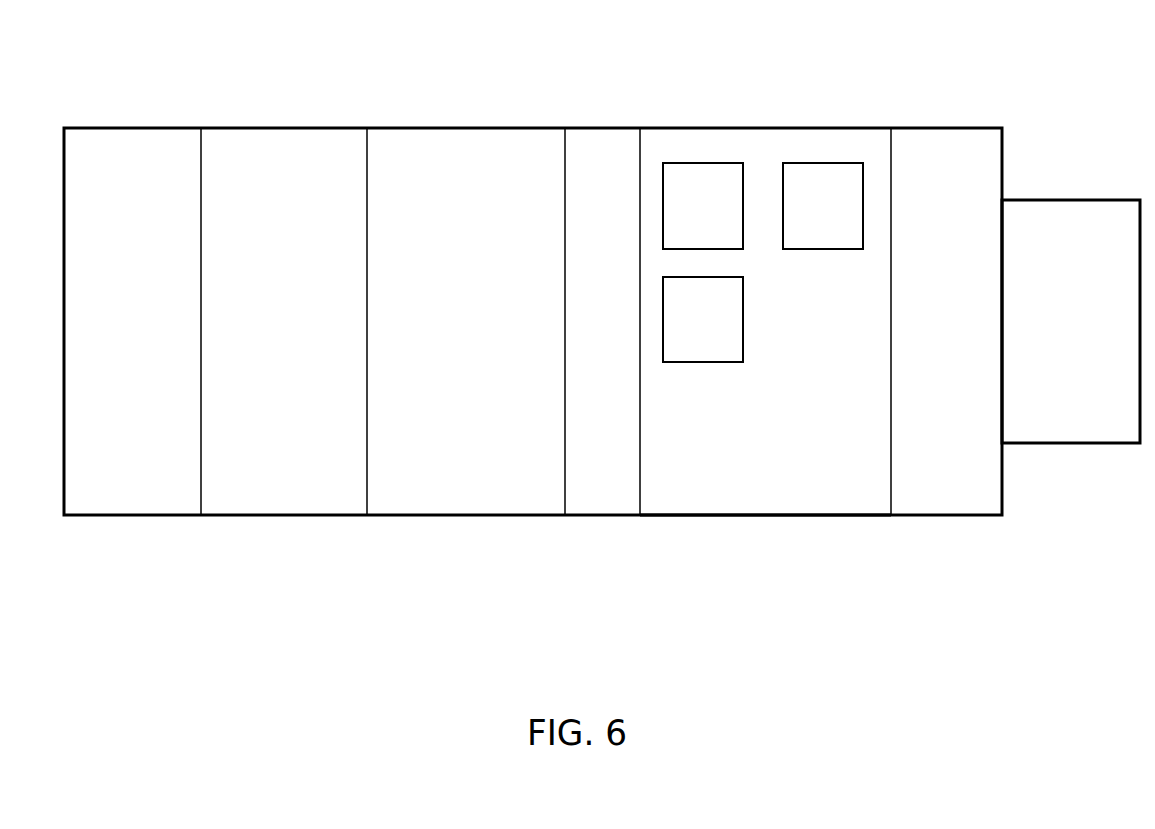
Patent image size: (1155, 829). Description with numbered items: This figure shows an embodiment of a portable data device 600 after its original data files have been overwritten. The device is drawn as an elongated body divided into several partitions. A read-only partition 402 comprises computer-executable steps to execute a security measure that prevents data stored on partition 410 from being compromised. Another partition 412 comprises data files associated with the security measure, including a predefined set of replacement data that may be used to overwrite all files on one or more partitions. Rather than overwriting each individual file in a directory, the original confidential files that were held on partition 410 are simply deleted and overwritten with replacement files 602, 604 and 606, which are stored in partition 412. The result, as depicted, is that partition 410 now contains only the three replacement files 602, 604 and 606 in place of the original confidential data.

The portable data device 600 is at (132, 47).
The read-only partition 402 is at (625, 336).
The partition 410 is at (774, 504).
The partition 412 is at (970, 336).
The file 602 is at (730, 222).
The file 604 is at (840, 222).
The file 606 is at (727, 332).